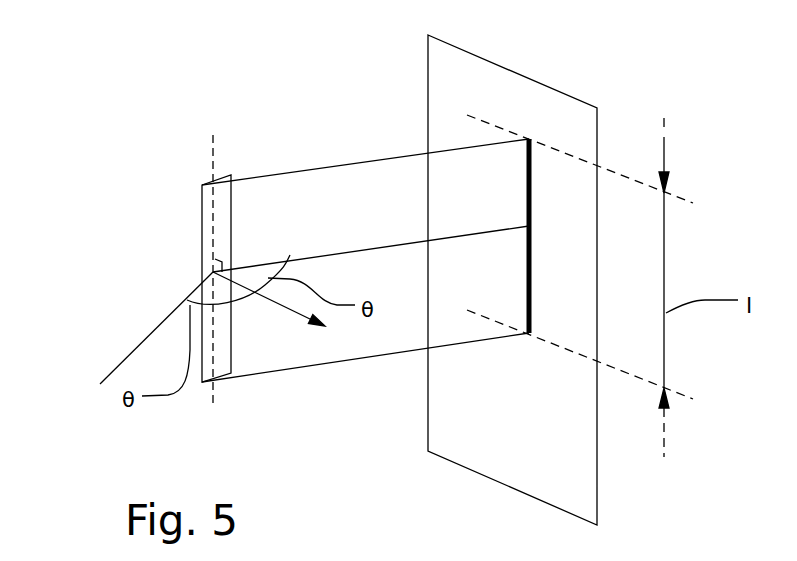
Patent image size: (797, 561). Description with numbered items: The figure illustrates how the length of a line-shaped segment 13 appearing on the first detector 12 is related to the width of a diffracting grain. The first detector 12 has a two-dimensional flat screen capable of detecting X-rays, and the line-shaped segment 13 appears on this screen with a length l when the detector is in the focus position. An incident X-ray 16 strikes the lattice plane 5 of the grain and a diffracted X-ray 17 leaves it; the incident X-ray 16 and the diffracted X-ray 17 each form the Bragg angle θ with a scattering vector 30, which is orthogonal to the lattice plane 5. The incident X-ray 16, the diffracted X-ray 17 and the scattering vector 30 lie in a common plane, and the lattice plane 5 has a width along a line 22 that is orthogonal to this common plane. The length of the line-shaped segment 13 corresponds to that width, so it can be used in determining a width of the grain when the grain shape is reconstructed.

The lattice plane 5 is at (205, 232).
The line 22 is at (213, 155).
The incident X-ray 16 is at (129, 354).
The diffracted X-ray 17 is at (290, 255).
The scattering vector 30 is at (295, 313).
The first detector 12 is at (552, 457).
The line-shaped segment 13 is at (531, 288).